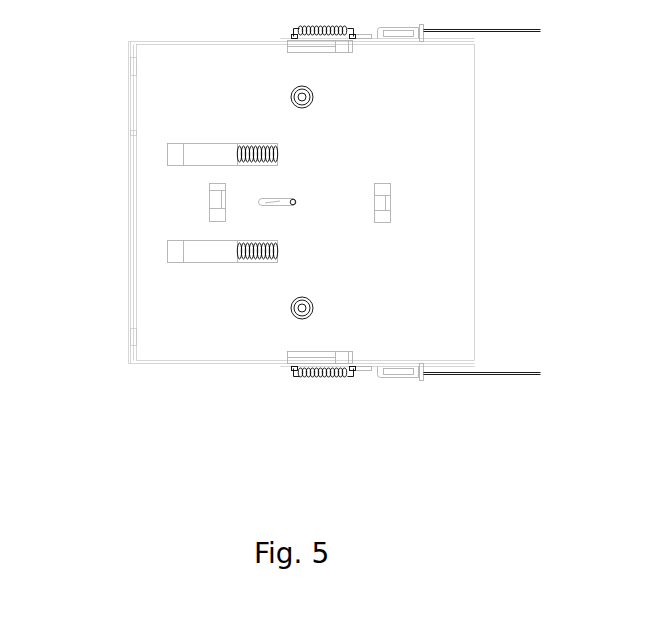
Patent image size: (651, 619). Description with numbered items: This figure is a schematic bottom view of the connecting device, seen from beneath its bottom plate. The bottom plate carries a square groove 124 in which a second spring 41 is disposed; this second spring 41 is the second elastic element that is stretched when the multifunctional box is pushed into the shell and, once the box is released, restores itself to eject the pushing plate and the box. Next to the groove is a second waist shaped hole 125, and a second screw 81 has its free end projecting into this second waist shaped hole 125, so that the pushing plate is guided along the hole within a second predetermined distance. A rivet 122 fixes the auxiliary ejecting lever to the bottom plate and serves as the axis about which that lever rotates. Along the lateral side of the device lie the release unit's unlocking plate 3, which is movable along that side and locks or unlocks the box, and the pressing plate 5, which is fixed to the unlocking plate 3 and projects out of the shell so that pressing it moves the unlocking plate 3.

The unlocking plate 3 is at (408, 367).
The pressing plate 5 is at (518, 374).
The second spring 41 is at (240, 257).
The second screw 81 is at (296, 201).
The rivet 122 is at (300, 309).
The square groove 124 is at (215, 247).
The second waist shaped hole 125 is at (223, 207).